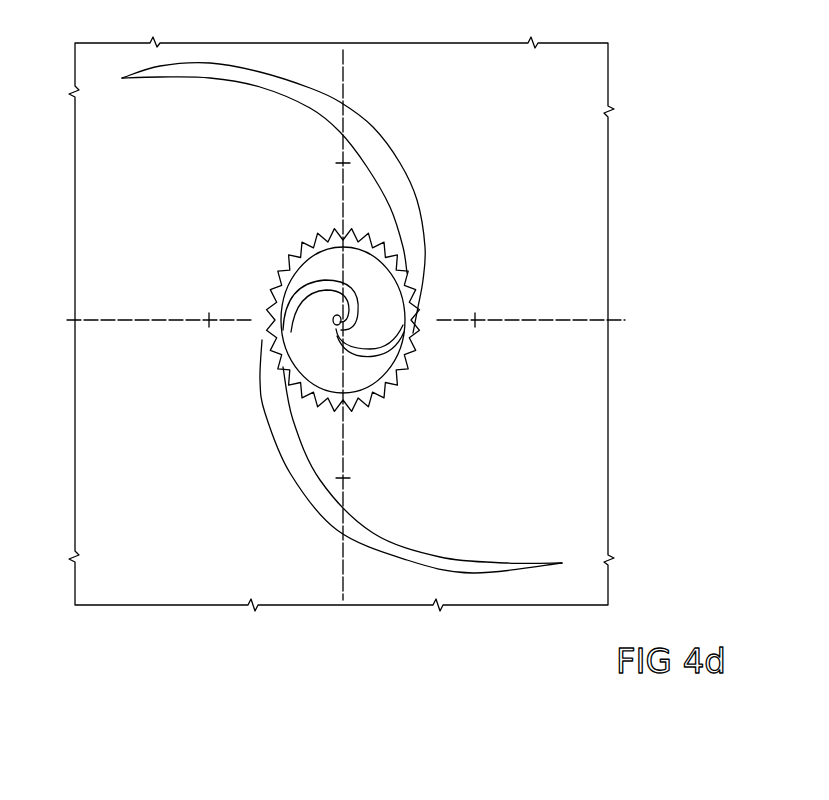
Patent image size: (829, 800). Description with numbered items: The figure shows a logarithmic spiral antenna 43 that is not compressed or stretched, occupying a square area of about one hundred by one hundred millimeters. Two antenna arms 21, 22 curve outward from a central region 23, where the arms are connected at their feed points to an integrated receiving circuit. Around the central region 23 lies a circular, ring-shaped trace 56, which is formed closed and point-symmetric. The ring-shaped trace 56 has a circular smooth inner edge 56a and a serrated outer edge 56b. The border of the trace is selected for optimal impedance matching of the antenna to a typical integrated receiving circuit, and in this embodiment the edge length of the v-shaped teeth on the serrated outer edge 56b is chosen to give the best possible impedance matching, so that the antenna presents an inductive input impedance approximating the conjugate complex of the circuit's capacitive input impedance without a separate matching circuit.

The logarithmic spiral antenna 43 is at (154, 172).
The antenna arm 21 is at (216, 88).
The antenna arm 22 is at (511, 555).
The central region 23 is at (322, 326).
The ring-shaped trace 56 is at (420, 411).
The smooth inner edge 56a is at (376, 265).
The serrated outer edge 56b is at (310, 223).